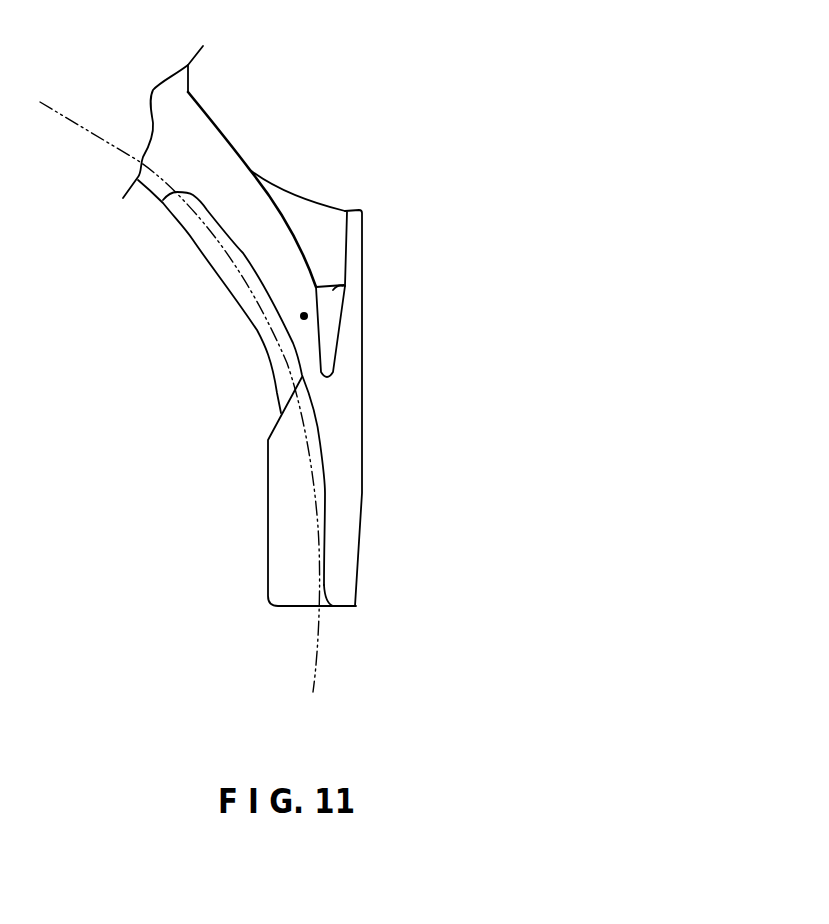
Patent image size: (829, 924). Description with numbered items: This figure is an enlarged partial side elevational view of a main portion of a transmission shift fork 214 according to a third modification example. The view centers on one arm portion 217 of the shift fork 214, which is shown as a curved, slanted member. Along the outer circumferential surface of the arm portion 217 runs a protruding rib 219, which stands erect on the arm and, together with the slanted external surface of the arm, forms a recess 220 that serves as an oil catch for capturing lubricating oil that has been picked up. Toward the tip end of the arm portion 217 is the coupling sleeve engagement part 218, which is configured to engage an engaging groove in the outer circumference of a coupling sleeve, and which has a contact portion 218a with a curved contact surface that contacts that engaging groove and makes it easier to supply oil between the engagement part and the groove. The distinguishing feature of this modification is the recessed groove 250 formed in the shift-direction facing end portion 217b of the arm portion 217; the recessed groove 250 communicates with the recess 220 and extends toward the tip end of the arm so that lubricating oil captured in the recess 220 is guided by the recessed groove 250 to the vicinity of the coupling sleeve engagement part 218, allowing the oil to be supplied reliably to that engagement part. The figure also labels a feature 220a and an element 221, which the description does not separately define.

The shift fork 214 is at (396, 99).
The arm portion 217 is at (227, 137).
The shift-direction facing end portion 217b is at (304, 316).
The coupling sleeve engagement part 218 is at (265, 406).
The contact portion 218a is at (285, 525).
The protruding rib 219 is at (360, 225).
The recess 220 is at (326, 264).
The recess end 220a is at (332, 288).
The inclined edge 221 is at (290, 190).
The recessed groove 250 is at (339, 325).